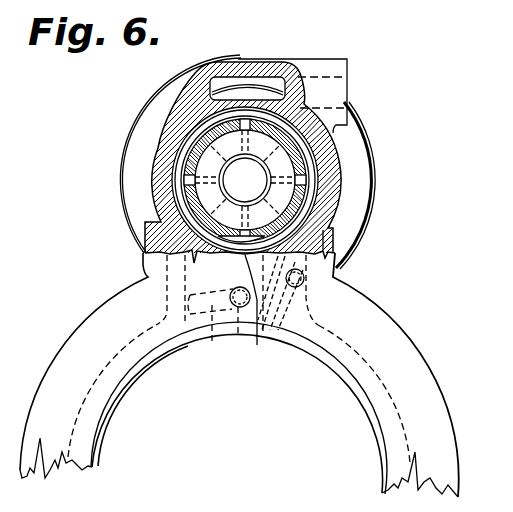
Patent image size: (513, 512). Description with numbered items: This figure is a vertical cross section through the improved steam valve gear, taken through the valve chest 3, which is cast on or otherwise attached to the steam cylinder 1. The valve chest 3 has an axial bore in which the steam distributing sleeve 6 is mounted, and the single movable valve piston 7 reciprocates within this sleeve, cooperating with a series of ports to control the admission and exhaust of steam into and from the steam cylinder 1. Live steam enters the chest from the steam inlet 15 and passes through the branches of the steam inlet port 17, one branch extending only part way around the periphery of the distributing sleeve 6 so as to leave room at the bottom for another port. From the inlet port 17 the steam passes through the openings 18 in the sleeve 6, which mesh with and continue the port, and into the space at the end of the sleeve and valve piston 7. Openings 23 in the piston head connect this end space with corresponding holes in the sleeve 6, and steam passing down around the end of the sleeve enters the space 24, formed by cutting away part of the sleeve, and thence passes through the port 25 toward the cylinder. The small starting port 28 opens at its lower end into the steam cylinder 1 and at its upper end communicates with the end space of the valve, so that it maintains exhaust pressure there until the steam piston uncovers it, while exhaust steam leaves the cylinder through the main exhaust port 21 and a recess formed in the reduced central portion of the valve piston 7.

The steam cylinder 1 is at (403, 393).
The valve chest 3 is at (137, 162).
The steam distributing sleeve 6 is at (336, 143).
The valve piston 7 is at (200, 195).
The steam inlet 15 is at (335, 88).
The steam inlet port 17 is at (261, 83).
The openings in the distributing sleeve 18 is at (306, 182).
The main exhaust port 21 is at (215, 320).
The openings in the piston head 23 is at (245, 180).
The space formed by cutting away part of the sleeve 24 is at (258, 340).
The port 25 is at (304, 279).
The starting port 28 is at (312, 300).